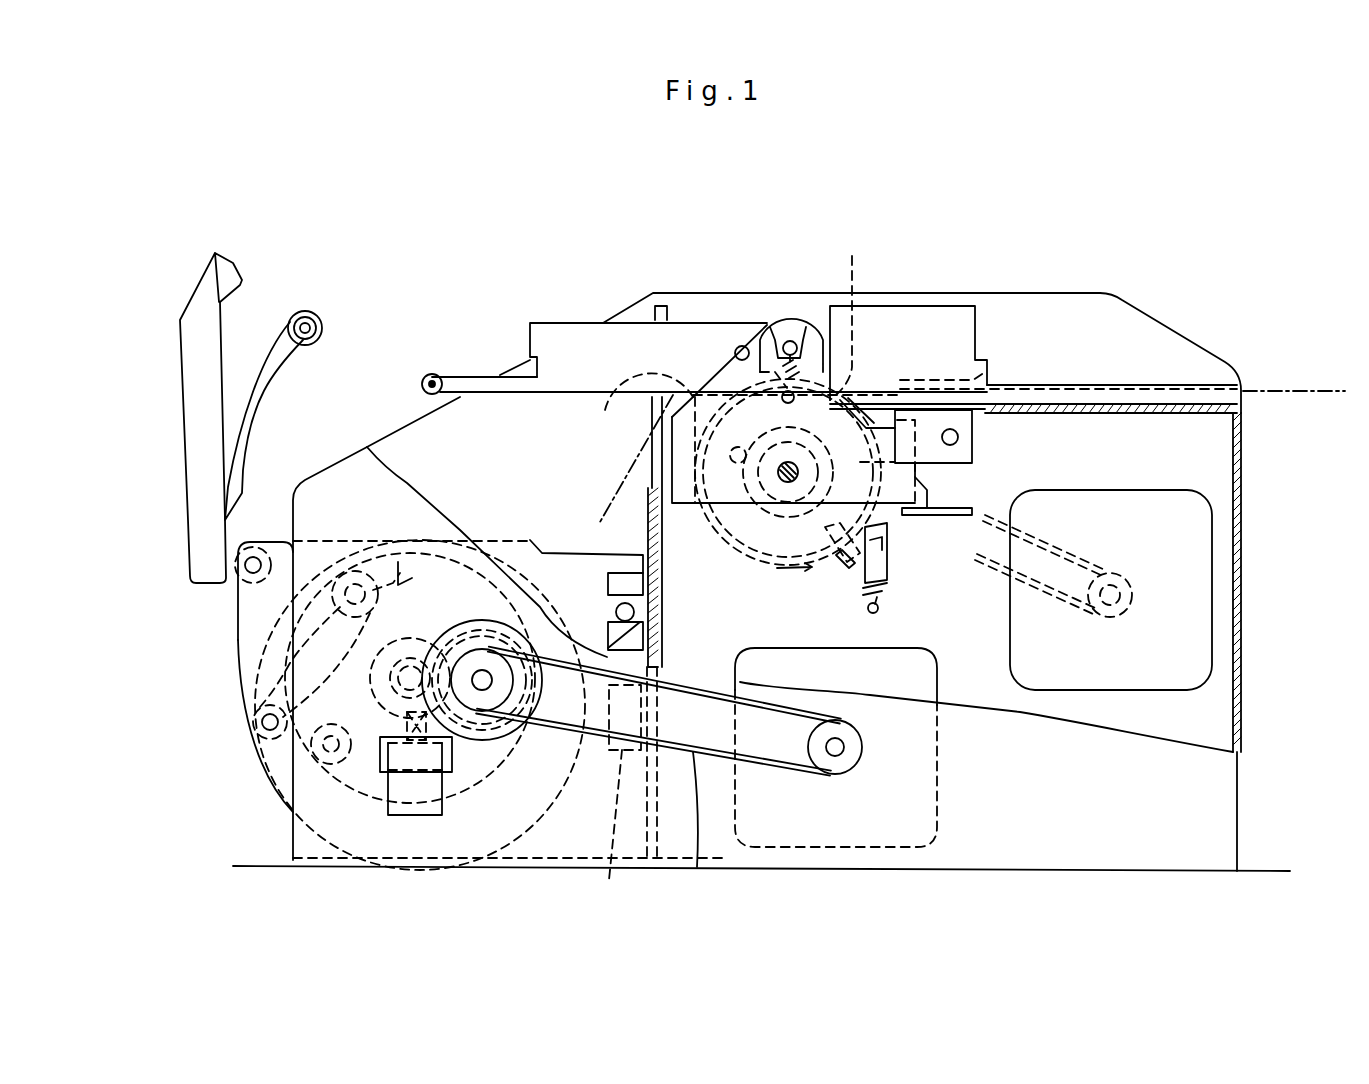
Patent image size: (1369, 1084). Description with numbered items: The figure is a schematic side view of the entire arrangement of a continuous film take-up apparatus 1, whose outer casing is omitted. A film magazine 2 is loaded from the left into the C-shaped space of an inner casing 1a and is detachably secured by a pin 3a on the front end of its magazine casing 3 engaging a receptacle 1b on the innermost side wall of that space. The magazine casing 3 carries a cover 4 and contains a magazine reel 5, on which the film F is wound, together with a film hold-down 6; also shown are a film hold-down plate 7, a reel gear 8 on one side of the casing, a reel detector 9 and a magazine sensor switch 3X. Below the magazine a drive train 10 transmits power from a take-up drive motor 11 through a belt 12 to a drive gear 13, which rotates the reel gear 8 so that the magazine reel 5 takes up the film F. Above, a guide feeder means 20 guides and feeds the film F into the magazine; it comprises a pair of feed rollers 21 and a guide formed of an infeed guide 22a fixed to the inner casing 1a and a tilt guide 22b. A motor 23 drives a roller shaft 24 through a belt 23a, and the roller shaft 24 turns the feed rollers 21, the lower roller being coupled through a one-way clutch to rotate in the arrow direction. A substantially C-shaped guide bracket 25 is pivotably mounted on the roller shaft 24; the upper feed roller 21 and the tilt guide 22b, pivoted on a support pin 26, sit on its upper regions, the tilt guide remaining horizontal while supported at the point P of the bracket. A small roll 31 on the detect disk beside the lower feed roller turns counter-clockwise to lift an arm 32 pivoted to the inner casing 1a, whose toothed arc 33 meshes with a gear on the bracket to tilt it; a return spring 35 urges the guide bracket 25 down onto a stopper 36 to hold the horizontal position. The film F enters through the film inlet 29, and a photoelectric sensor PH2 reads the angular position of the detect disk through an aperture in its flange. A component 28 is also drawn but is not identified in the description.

The continuous film take-up apparatus 1 is at (508, 314).
The inner casing 1a is at (1241, 597).
The receptacle 1b is at (645, 638).
The film magazine 2 is at (171, 540).
The magazine casing 3 is at (248, 642).
The pin 3a is at (633, 610).
The magazine sensor switch 3X is at (609, 880).
The cover 4 is at (190, 420).
The magazine reel 5 is at (310, 737).
The film hold-down 6 is at (270, 363).
The film hold-down plate 7 is at (400, 562).
The reel gear 8 is at (452, 625).
The reel detector 9 is at (358, 735).
The drive train 10 is at (778, 641).
The take-up drive motor 11 is at (815, 826).
The belt 12 is at (697, 867).
The drive gear 13 is at (497, 625).
The guide feeder means 20 is at (591, 307).
The feed rollers 21 is at (803, 320).
The infeed guide 22a is at (926, 306).
The tilt guide 22b is at (718, 327).
The motor 23 is at (1158, 517).
The belt 23a is at (1070, 555).
The roller shaft 24 is at (786, 483).
The guide bracket 25 is at (705, 372).
The support pin 26 is at (745, 346).
The roller 28 is at (428, 375).
The film inlet 29 is at (993, 378).
The small roll 31 is at (793, 479).
The arm 32 is at (960, 437).
The toothed arc 33 is at (927, 458).
The return spring 35 is at (887, 588).
The stopper 36 is at (932, 515).
The point P is at (911, 447).
The film F is at (1290, 389).
The photoelectric sensor PH2 is at (858, 553).